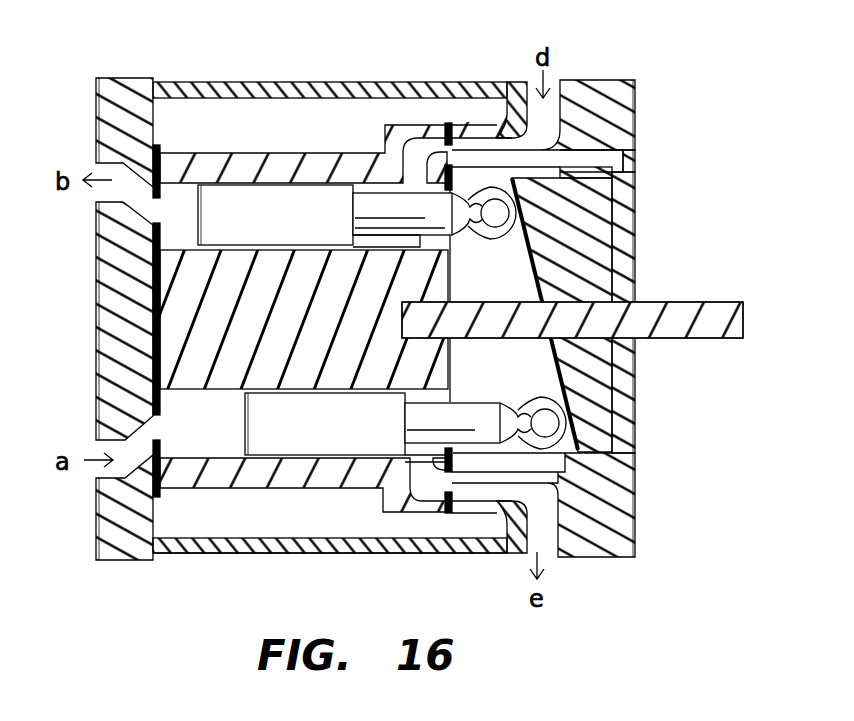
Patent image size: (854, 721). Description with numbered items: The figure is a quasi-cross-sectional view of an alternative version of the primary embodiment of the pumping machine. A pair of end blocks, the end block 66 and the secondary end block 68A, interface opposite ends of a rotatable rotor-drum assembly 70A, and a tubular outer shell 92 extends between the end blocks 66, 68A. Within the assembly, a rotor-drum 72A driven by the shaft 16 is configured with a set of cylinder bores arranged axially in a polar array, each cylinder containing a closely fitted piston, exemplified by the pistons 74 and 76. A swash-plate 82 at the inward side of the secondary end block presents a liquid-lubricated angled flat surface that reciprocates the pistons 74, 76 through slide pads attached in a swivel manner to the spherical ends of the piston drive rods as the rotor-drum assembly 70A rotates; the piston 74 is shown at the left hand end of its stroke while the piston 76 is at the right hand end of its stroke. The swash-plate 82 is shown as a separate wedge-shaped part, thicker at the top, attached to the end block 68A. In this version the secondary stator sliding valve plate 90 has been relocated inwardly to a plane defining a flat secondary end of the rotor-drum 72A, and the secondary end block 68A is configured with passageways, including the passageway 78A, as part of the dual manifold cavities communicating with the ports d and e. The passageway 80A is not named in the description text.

The shaft 16 is at (705, 306).
The end block 66 is at (167, 585).
The APX end block 68A is at (637, 615).
The rotor-drum assembly 70A is at (460, 65).
The rotor-drum 72A is at (304, 319).
The piston 74 is at (297, 229).
The piston 76 is at (345, 437).
The passageway 78A is at (500, 149).
The lower fluid channel 80A is at (493, 490).
The swash-plate 82 is at (588, 258).
The stator sliding valve plate 90 is at (565, 473).
The tubular outer shell 92 is at (378, 543).